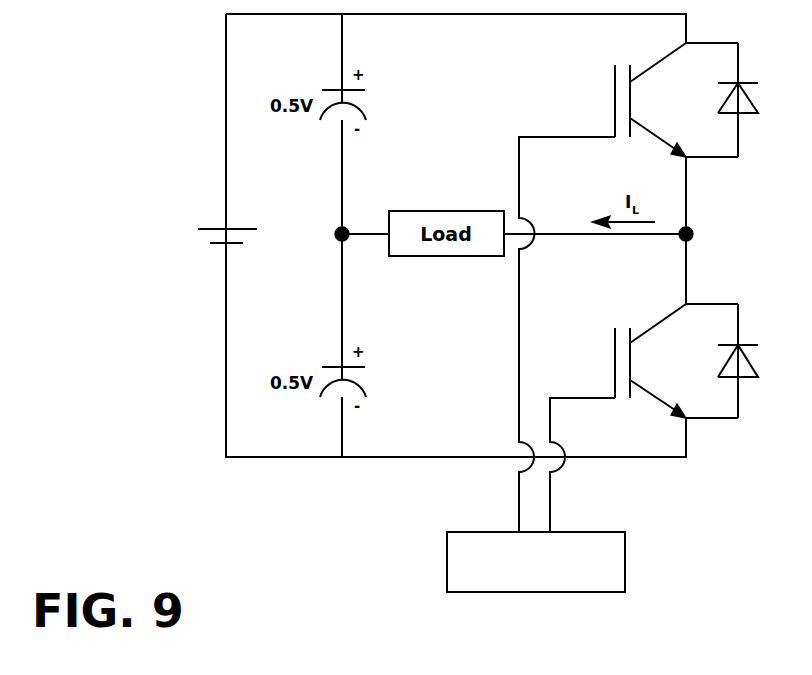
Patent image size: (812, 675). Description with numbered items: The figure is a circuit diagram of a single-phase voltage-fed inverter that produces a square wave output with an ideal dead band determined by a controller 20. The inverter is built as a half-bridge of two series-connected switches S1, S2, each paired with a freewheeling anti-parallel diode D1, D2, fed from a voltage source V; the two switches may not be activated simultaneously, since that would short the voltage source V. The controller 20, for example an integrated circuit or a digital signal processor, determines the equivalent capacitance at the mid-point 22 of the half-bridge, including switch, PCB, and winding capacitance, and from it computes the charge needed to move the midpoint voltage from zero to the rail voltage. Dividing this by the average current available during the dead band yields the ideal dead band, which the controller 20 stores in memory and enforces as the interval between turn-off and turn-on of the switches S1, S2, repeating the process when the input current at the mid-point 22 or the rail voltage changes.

The controller 20 is at (625, 550).
The mid-point 22 is at (693, 234).
The switch S1 is at (658, 138).
The switch S2 is at (658, 326).
The freewheeling anti-parallel diode D1 is at (746, 100).
The freewheeling anti-parallel diode D2 is at (746, 361).
The voltage source V is at (212, 235).